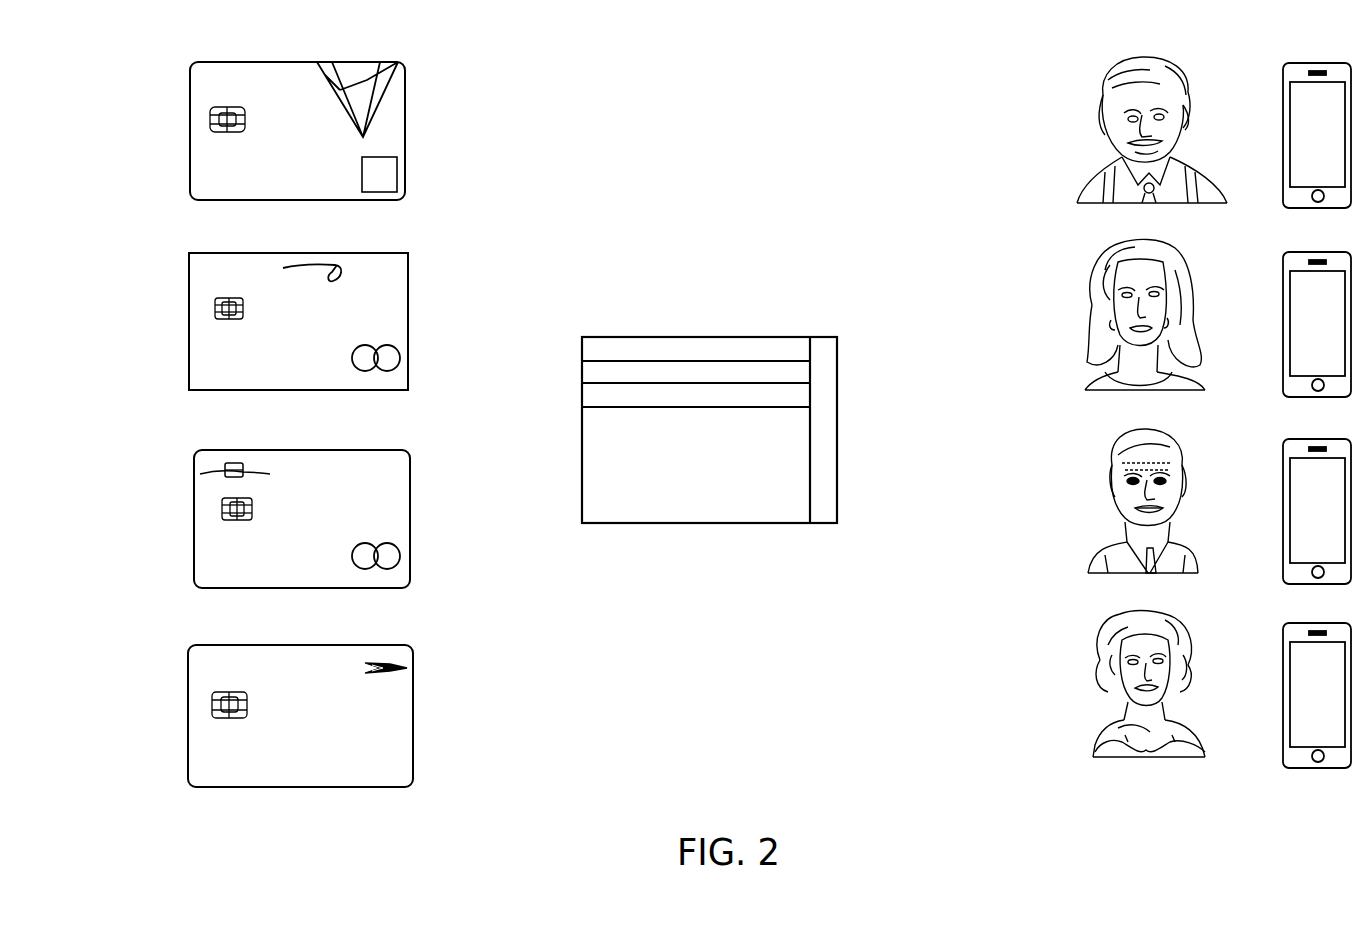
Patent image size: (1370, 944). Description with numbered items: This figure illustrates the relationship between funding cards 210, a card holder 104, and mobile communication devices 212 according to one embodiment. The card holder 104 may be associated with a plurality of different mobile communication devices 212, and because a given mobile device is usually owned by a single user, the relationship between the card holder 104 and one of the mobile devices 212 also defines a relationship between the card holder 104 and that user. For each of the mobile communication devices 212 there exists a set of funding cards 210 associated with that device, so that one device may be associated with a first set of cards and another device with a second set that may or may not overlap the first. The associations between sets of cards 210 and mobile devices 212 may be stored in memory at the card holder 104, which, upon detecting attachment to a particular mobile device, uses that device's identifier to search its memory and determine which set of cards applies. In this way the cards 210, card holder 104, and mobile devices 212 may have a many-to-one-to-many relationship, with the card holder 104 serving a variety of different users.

The funding cards 210 is at (450, 63).
The card holder 104 is at (697, 524).
The mobile communication devices 212 is at (1005, 61).